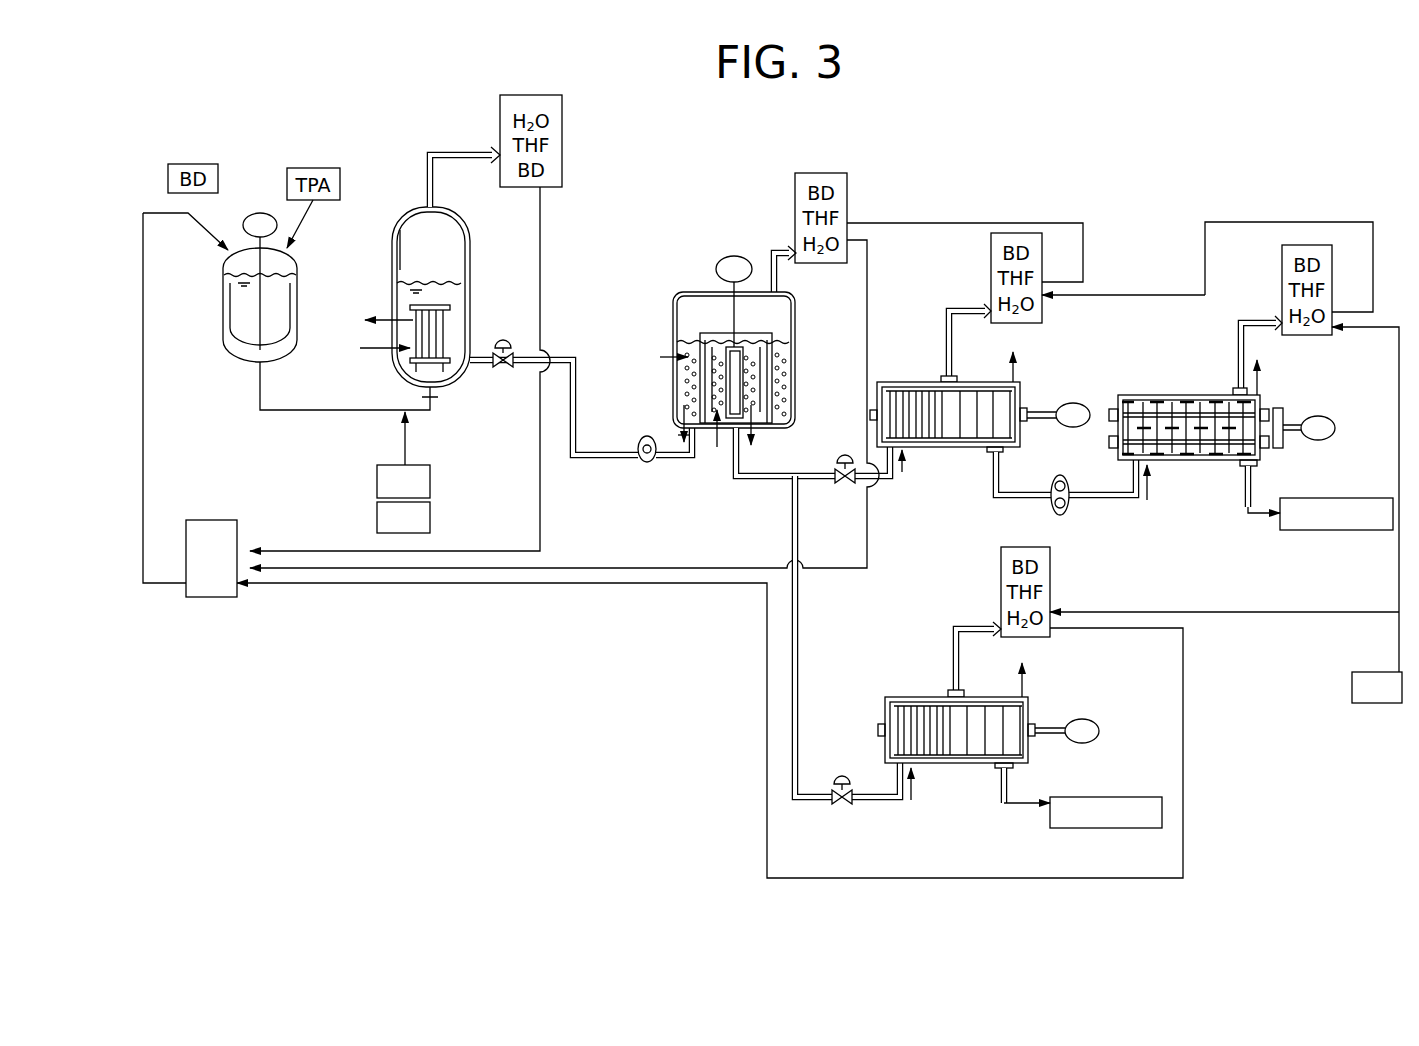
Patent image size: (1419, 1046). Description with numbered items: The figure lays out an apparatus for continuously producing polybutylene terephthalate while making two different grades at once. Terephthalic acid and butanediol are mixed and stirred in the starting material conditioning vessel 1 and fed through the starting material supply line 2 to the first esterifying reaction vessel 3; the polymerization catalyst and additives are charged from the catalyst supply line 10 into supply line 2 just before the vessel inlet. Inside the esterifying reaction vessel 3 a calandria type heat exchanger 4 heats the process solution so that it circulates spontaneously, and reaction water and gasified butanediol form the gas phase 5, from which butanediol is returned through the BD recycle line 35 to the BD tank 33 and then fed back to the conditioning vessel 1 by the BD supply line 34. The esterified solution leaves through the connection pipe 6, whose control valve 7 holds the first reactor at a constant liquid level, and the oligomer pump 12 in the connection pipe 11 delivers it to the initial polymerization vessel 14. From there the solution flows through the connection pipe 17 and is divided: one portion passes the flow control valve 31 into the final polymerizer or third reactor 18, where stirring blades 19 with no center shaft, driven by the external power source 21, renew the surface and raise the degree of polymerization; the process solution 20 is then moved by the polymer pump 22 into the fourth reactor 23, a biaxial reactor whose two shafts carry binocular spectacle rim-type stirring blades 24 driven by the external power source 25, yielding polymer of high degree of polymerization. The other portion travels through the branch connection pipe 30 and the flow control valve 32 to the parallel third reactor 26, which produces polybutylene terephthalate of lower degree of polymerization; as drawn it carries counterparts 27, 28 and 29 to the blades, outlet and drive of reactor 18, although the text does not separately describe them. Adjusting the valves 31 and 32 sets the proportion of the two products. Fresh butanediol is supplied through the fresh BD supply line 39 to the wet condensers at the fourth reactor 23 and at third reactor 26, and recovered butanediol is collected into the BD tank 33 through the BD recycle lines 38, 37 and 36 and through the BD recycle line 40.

The starting material conditioning vessel 1 is at (243, 322).
The starting material supply line 2 is at (310, 412).
The first esterifying reaction vessel 3 is at (443, 267).
The calandria type heat exchanger 4 is at (445, 320).
The gas phase 5 is at (452, 258).
The connection pipe 6 is at (478, 370).
The control valve 7 is at (503, 372).
The catalyst supply line 10 is at (408, 446).
The connection pipe 11 is at (600, 460).
The oligomer pump 12 is at (645, 463).
The initial polymerization vessel 14 is at (797, 401).
The connection pipe 17 is at (768, 483).
The final polymerizer 18 is at (963, 402).
The stirring blades 19 is at (933, 445).
The process solution 20 is at (1040, 492).
The external power source 21 is at (1073, 403).
The polymer pump 22 is at (1065, 516).
The fourth reactor 23 is at (1178, 462).
The binocular spectacle rim-type stirring blades 24 is at (1147, 395).
The external power source 25 is at (1318, 406).
The third reactor 26 is at (971, 716).
The screw 27 is at (938, 758).
The polymer discharge pipe 28 is at (1020, 808).
The motor 29 is at (1080, 718).
The branch connection pipe 30 is at (800, 606).
The flow control valve 31 is at (845, 485).
The flow control valve 32 is at (845, 806).
The BD tank 33 is at (222, 520).
The BD supply line 34 is at (143, 365).
The BD recycle line 35 is at (542, 271).
The BD recycle line 36 is at (870, 284).
The BD recycle line 37 is at (1048, 222).
The BD recycle line 38 is at (1248, 222).
The fresh BD supply line 39 is at (1398, 642).
The BD recycle line 40 is at (1185, 718).